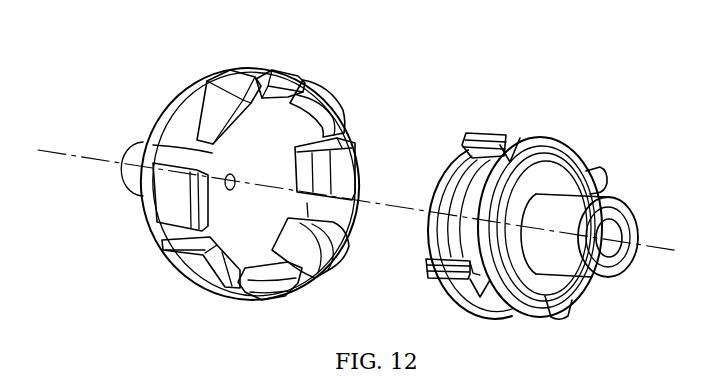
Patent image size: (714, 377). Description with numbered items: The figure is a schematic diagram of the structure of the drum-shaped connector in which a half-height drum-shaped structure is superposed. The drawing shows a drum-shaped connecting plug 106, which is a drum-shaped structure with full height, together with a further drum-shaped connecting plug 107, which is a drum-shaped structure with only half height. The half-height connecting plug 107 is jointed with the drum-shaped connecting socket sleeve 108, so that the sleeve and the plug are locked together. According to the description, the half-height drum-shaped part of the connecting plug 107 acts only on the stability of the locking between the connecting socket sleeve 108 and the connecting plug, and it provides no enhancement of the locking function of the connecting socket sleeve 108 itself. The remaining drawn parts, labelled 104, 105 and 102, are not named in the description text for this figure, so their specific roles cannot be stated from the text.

The drum-shaped connecting socket sleeve 108 is at (190, 123).
The cushion block 104 is at (302, 145).
The block 105 is at (330, 178).
The drum-shaped connecting plug 106 is at (445, 210).
The coupling hub 102 is at (472, 207).
The drum-shaped connecting plug 107 is at (512, 135).